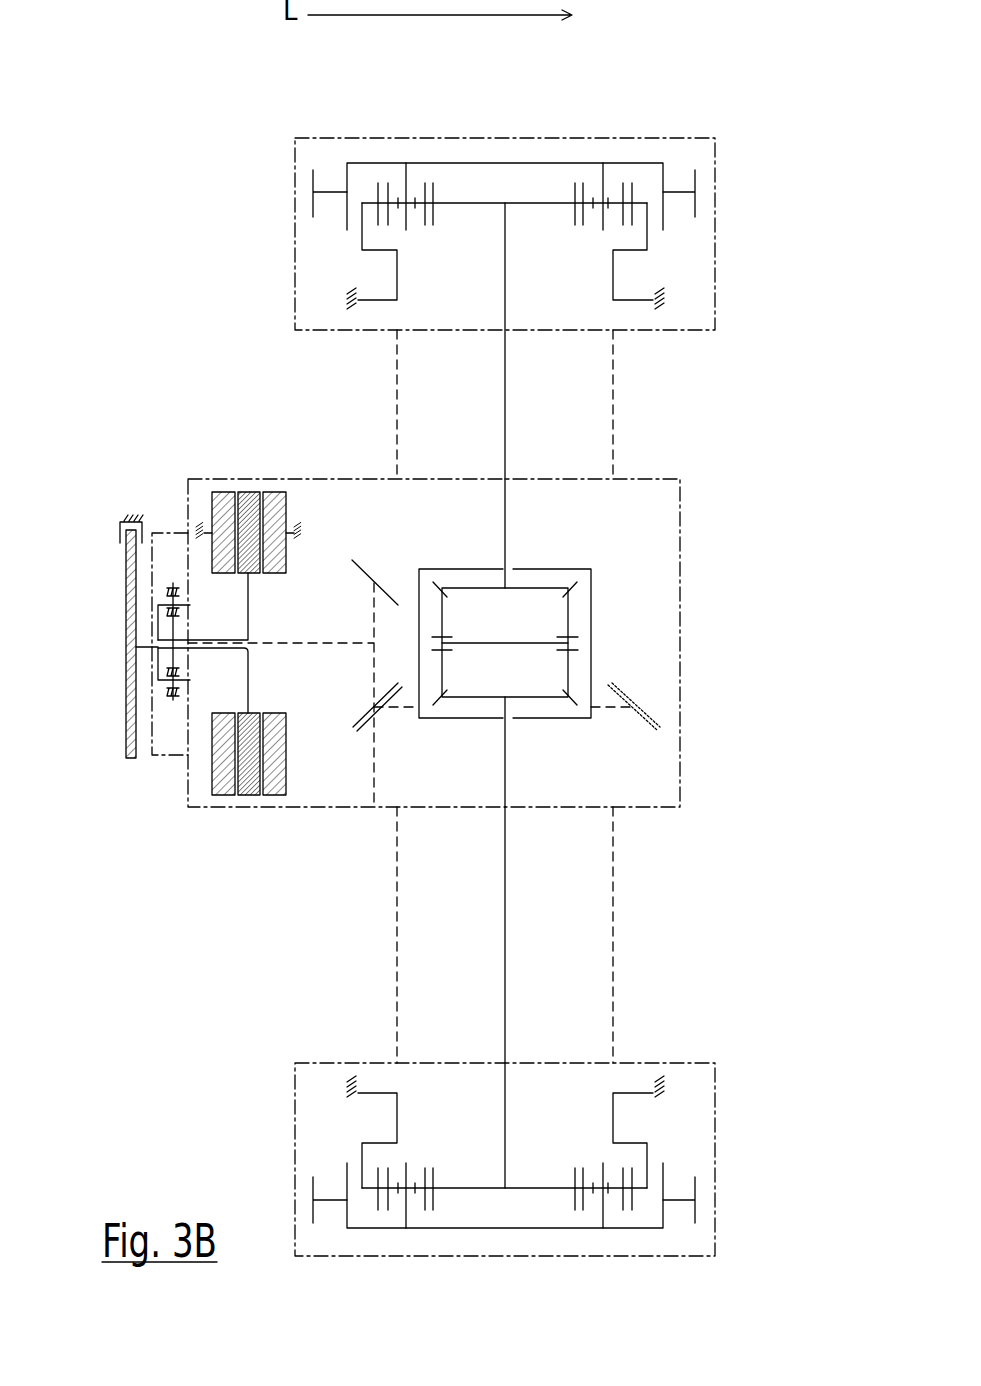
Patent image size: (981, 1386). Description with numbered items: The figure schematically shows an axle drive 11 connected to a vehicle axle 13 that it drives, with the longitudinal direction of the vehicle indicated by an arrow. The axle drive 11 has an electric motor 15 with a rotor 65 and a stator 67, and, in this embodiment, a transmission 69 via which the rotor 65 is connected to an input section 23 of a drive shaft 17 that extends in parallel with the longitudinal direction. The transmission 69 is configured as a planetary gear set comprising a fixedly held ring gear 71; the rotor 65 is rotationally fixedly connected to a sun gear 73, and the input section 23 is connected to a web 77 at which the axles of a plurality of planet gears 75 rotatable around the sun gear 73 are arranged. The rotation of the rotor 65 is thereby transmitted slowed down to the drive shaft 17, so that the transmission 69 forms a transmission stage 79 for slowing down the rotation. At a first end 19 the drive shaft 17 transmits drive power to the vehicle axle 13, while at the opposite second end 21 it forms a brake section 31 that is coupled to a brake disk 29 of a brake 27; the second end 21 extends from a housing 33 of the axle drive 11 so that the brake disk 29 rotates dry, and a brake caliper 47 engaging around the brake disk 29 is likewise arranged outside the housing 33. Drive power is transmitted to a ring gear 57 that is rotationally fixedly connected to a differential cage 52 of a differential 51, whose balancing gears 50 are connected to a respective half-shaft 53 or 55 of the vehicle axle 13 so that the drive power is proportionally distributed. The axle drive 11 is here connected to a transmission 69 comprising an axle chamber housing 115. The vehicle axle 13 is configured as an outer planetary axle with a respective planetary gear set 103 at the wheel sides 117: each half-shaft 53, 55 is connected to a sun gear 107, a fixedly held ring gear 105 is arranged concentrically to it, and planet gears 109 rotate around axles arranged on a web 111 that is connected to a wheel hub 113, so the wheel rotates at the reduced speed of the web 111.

The axle drive 11 is at (126, 467).
The vehicle axle 13 is at (518, 395).
The electric motor 15 is at (326, 491).
The drive shaft 17 is at (318, 642).
The first end 19 is at (365, 650).
The second end 21 is at (143, 650).
The brake section 31 is at (156, 794).
The input section 23 is at (160, 647).
The brake 27 is at (91, 700).
The brake disk 29 is at (126, 625).
The housing 33 is at (681, 508).
The brake caliper 47 is at (122, 532).
The balancing gears 50 is at (443, 613).
The differential 51 is at (628, 629).
The differential cage 52 is at (435, 718).
The half-shaft 53 is at (505, 456).
The half-shaft 55 is at (505, 760).
The ring gear 57 is at (372, 717).
The rotor 65 is at (248, 500).
The stator 67 is at (220, 505).
The transmission 69 is at (178, 537).
The transmission stage 79 is at (203, 572).
The ring gear 71 is at (178, 597).
The sun gear 73 is at (178, 613).
The planet gears 75 is at (178, 613).
The web 77 is at (171, 693).
The planetary gear set 103 is at (439, 295).
The ring gear 105 is at (375, 195).
The sun gear 107 is at (433, 195).
The planet gears 109 is at (399, 200).
The web 111 is at (548, 163).
The wheel hub 113 is at (310, 193).
The axle chamber housing 115 is at (613, 930).
The wheel sides 117 is at (717, 185).